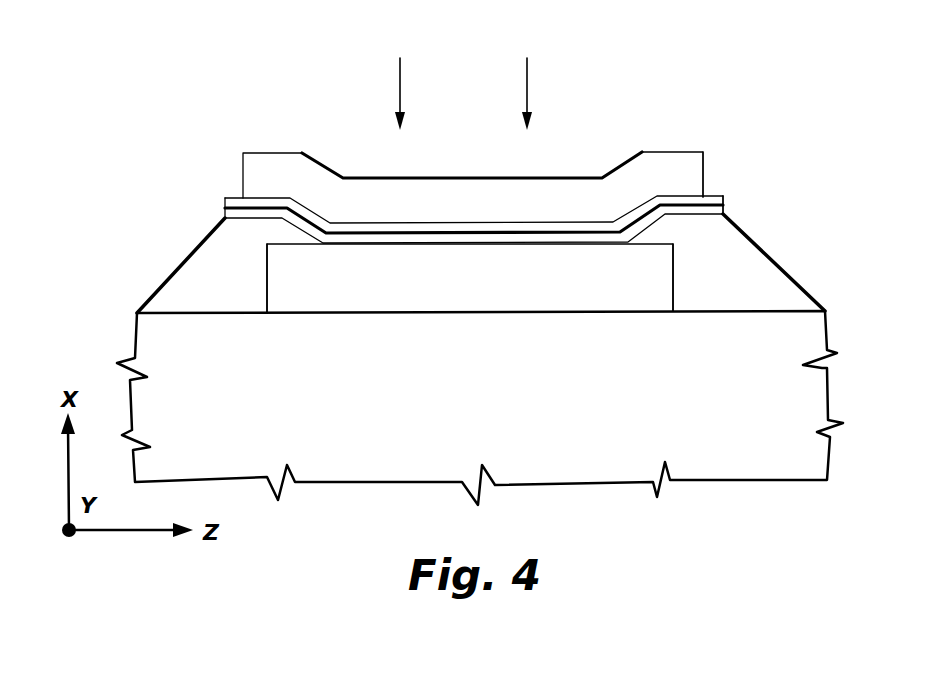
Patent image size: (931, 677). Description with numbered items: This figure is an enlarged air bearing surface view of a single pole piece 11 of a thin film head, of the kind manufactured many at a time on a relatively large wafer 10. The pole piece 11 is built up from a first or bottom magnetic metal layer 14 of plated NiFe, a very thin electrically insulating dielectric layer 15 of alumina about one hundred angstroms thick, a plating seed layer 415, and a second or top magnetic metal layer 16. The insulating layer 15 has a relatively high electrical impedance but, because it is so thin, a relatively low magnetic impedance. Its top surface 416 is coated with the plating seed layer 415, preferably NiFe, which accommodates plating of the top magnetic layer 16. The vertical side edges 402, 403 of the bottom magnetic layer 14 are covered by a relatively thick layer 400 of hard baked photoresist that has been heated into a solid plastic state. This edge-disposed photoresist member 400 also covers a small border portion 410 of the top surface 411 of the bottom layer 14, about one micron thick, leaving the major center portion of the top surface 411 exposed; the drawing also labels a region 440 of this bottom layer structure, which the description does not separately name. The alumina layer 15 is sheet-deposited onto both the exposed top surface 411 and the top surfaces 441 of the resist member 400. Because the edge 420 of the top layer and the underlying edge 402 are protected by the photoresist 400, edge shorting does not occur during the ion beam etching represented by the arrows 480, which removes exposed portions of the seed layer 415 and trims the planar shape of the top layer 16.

The wafer 10 is at (715, 460).
The pole piece 11 is at (752, 56).
The bottom magnetic metal layer 14 is at (560, 282).
The electrically insulating dielectric layer 15 is at (728, 206).
The top magnetic metal layer 16 is at (697, 186).
The hard baked photoresist layer 400 is at (203, 277).
The side edge 402 is at (673, 287).
The side edge 403 is at (267, 277).
The border portion 410 is at (290, 244).
The top surface 411 is at (443, 246).
The plating seed layer 415 is at (725, 197).
The top surface 416 is at (400, 222).
The edge 420 is at (703, 163).
The pedestal block 440 is at (450, 313).
The top surfaces 441 is at (227, 218).
The ion beam etching arrows 480 is at (400, 88).